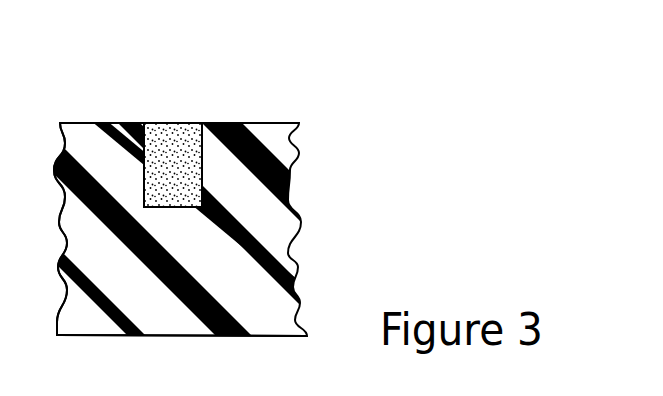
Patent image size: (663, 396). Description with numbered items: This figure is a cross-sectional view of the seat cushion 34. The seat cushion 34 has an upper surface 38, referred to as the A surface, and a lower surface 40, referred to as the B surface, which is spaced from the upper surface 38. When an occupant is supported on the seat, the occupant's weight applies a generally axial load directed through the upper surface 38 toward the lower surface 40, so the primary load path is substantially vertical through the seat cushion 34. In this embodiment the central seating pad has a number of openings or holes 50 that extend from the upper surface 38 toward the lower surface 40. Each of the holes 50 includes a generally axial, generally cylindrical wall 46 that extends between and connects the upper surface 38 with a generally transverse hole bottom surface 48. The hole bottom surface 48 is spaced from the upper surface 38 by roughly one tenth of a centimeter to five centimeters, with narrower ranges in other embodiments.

The seat cushion 34 is at (303, 100).
The upper surface 38 is at (78, 122).
The lower surface 40 is at (88, 336).
The cylindrical wall 46 is at (145, 147).
The hole bottom surface 48 is at (203, 198).
The holes 50 is at (178, 90).